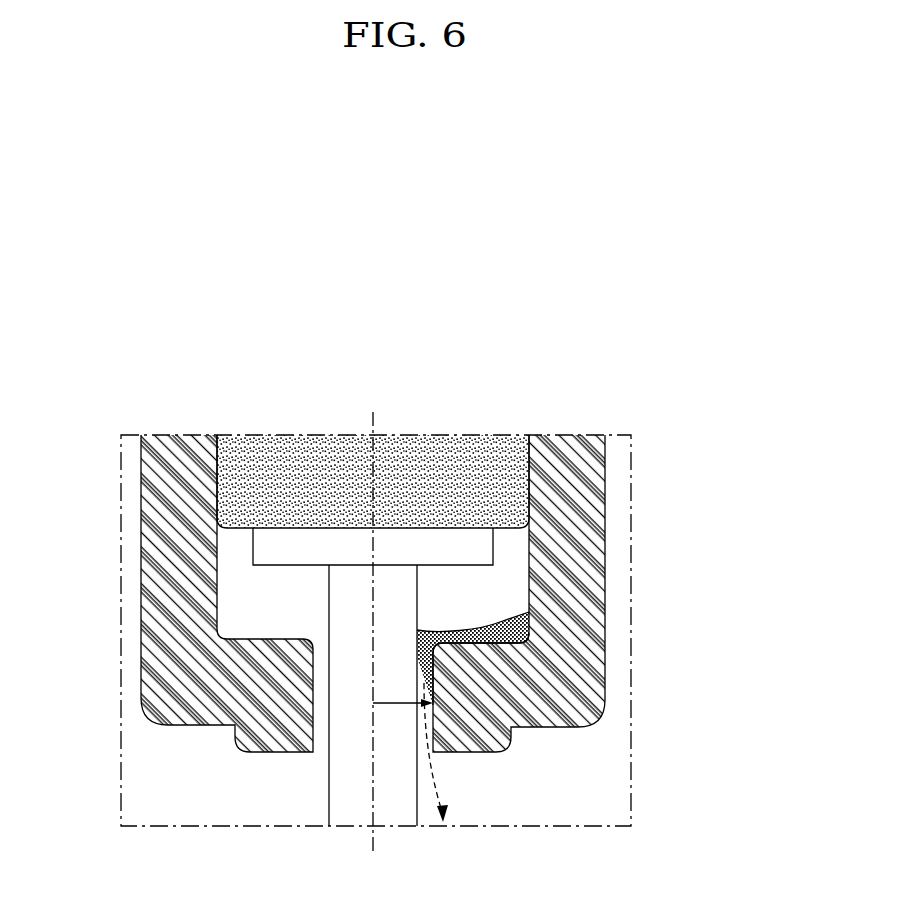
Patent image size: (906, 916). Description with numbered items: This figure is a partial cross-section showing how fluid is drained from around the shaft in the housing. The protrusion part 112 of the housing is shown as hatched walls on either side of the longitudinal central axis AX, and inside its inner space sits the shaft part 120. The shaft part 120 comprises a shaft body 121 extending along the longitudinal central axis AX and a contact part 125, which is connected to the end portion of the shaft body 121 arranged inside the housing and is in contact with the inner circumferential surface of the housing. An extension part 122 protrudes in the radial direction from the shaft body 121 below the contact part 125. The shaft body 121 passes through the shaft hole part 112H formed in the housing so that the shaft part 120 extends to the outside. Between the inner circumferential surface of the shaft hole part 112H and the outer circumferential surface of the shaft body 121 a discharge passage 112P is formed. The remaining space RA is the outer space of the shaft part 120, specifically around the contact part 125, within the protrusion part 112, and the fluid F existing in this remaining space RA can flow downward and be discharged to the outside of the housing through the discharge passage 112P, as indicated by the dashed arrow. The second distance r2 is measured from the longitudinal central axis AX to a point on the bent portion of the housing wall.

The protrusion part 112 is at (578, 686).
The discharge passage 112P is at (324, 696).
The shaft hole part 112H is at (315, 757).
The shaft part 120 is at (410, 630).
The shaft body 121 is at (403, 602).
The extension part 122 is at (263, 546).
The contact part 125 is at (503, 477).
The longitudinal central axis AX is at (374, 618).
The remaining space RA is at (286, 616).
The fluid F is at (520, 631).
The second distance r2 is at (404, 707).